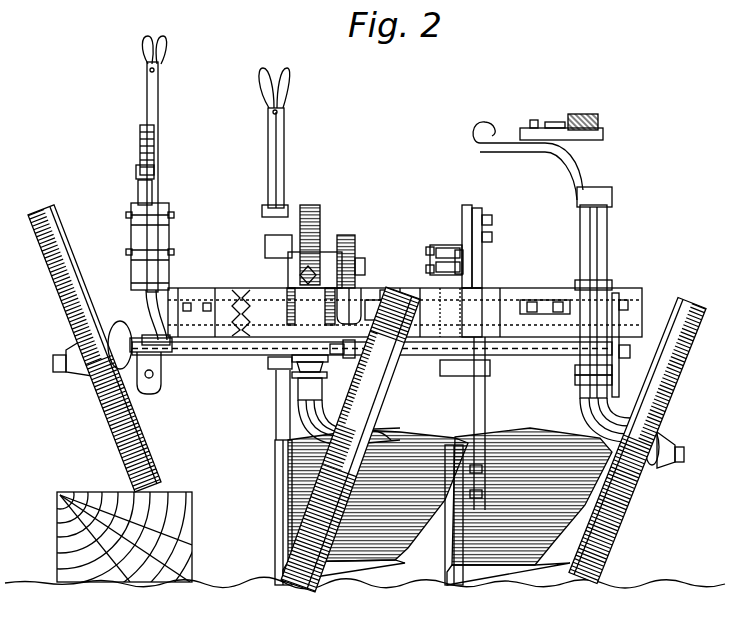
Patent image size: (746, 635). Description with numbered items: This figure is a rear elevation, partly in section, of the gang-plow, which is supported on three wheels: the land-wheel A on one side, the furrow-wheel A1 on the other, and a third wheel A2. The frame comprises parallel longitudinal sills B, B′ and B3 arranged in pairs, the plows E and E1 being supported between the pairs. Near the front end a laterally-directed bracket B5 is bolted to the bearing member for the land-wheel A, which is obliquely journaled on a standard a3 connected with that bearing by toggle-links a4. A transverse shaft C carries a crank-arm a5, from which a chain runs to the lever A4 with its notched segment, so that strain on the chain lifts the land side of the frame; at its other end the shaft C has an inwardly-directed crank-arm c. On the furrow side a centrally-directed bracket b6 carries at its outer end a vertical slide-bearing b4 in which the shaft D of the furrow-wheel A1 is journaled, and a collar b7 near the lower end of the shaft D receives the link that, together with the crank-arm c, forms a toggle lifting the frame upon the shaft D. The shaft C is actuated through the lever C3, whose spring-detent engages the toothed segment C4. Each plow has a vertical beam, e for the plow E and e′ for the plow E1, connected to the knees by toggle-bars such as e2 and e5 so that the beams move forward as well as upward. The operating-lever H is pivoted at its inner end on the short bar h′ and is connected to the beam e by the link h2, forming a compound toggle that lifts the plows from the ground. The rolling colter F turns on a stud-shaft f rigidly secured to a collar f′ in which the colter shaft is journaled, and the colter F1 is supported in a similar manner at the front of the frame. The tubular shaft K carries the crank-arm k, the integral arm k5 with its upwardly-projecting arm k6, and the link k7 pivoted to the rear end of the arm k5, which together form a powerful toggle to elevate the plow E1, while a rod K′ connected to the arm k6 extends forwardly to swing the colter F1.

The land-wheel A is at (113, 440).
The furrow-wheel A1 is at (637, 462).
The rear wheel A2 is at (307, 582).
The lever A4 is at (160, 160).
The longitudinal sill B is at (277, 215).
The longitudinal sill B′ is at (338, 237).
The longitudinal sill B3 is at (622, 297).
The laterally-directed bracket B5 is at (197, 297).
The transverse shaft C is at (372, 364).
The lever C3 is at (276, 155).
The toothed segment C4 is at (247, 300).
The shaft of the furrow-wheel D is at (592, 254).
The plow E is at (375, 506).
The plow E1 is at (529, 506).
The rolling colter F is at (485, 413).
The rolling colter F1 is at (273, 522).
The operating-lever H is at (357, 260).
The shaft K is at (372, 277).
The rod K′ is at (463, 262).
The standard a3 is at (153, 363).
The toggle-links a4 is at (165, 353).
The crank-arm a5 is at (153, 390).
The vertical slide-bearing b4 is at (592, 308).
The centrally-directed bracket b6 is at (525, 298).
The collar b7 is at (590, 387).
The crank-arm c is at (620, 333).
The vertical beam e is at (298, 220).
The vertical beam e′ is at (490, 248).
The toggle-bar e2 is at (314, 230).
The toggle-bar e5 is at (482, 223).
The stud-shaft f is at (353, 360).
The collar f′ is at (277, 347).
The short bar h′ is at (358, 275).
The link h2 is at (352, 223).
The crank-arm k is at (347, 347).
The integral arm k5 is at (392, 292).
The arm k6 is at (436, 243).
The link k7 is at (468, 223).